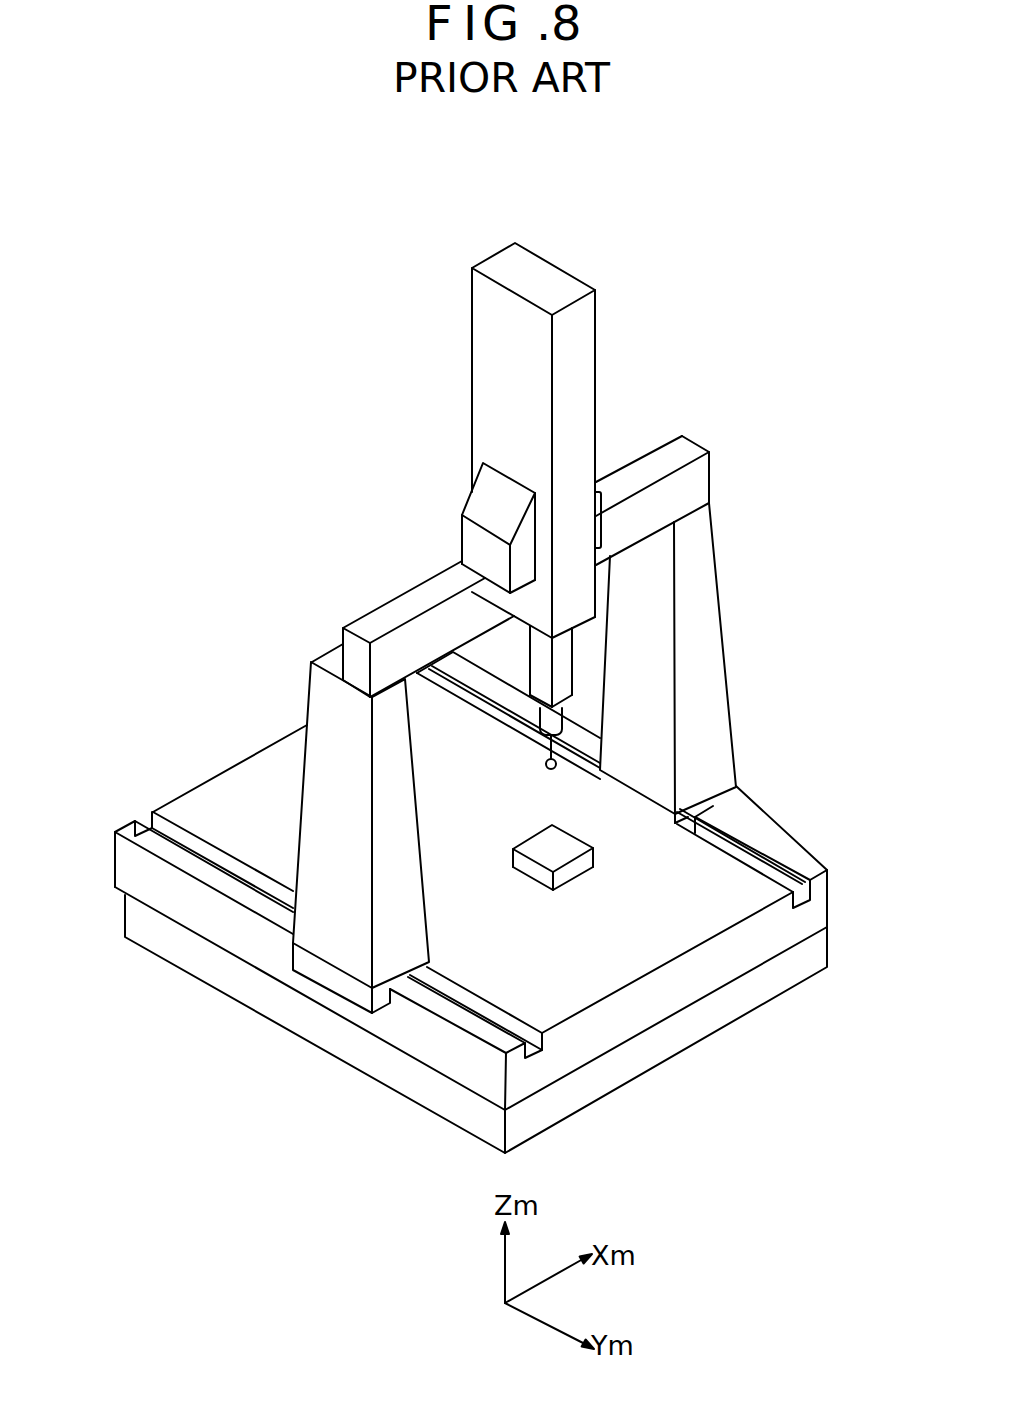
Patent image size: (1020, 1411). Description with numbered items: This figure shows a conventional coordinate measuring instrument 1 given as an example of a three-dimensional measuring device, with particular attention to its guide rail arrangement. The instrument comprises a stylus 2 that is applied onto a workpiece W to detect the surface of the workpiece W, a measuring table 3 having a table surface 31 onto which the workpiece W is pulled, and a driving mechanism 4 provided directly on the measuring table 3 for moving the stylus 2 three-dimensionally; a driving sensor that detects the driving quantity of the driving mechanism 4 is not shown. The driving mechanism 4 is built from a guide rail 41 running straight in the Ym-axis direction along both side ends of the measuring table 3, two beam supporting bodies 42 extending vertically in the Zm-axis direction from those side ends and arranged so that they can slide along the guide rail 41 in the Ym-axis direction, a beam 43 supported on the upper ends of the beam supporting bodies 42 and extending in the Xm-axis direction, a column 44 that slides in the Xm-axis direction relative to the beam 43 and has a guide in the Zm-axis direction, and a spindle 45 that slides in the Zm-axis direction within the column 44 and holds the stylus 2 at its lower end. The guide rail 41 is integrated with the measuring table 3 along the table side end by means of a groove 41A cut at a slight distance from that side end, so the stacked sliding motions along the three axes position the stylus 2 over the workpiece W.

The coordinate measuring instrument 1 is at (697, 295).
The stylus 2 is at (548, 771).
The measuring table 3 is at (655, 957).
The table surface 31 is at (748, 905).
The driving mechanism 4 is at (343, 446).
The guide rail 41 is at (135, 830).
The groove 41A is at (182, 835).
The beam supporting body 42 is at (322, 812).
The beam 43 is at (685, 445).
The column 44 is at (576, 393).
The spindle 45 is at (545, 716).
The workpiece W is at (538, 849).